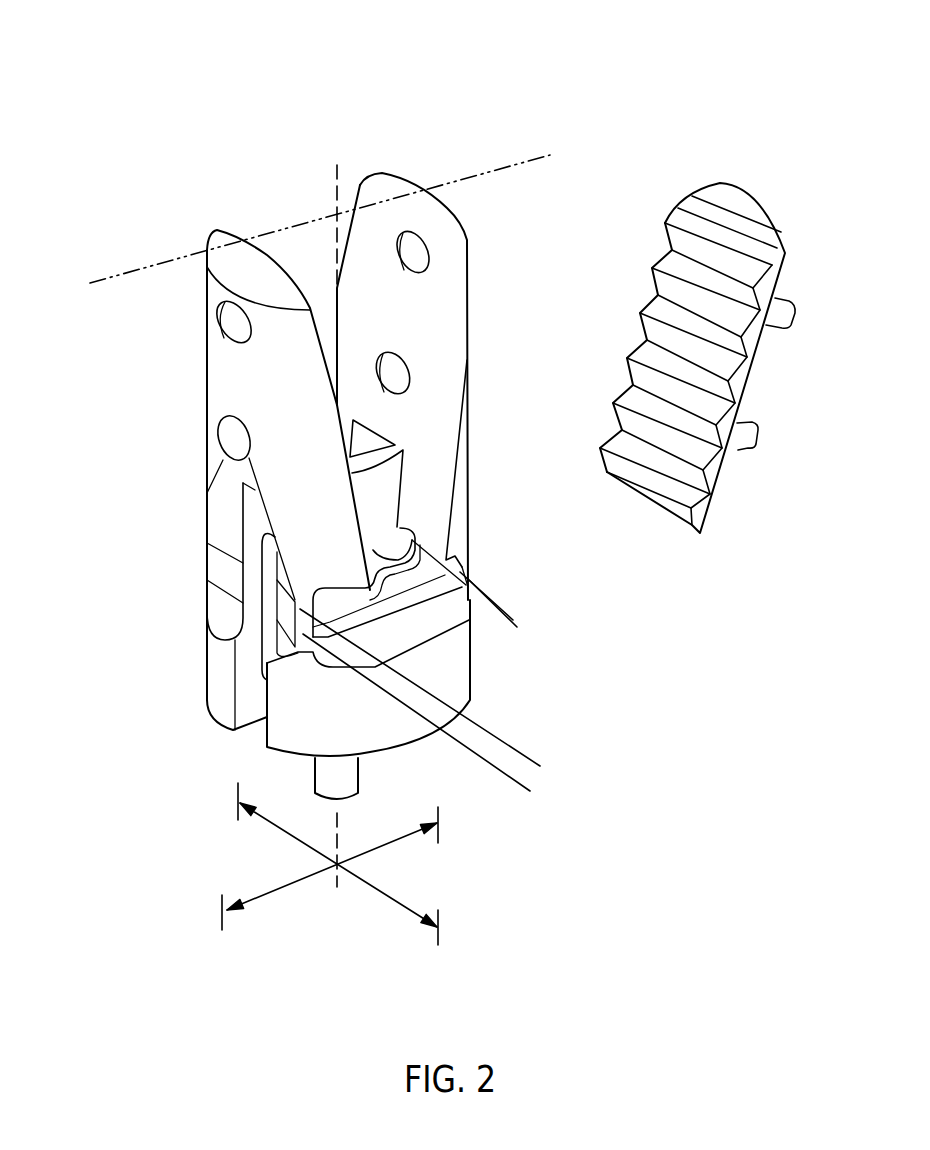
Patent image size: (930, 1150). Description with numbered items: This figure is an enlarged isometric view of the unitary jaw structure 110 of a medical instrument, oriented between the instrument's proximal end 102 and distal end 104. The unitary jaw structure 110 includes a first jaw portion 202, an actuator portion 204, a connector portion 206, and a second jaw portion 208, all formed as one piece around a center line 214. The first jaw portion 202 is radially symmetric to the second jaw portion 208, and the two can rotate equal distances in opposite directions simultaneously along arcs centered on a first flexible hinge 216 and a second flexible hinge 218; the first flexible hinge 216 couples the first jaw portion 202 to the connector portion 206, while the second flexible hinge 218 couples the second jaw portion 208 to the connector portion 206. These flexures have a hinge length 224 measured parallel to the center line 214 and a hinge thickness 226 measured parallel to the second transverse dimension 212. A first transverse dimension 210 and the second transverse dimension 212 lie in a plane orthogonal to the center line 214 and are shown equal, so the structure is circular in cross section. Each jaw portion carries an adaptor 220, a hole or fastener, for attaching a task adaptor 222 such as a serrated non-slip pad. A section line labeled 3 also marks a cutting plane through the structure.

The proximal end 102 is at (338, 960).
The distal end 104 is at (337, 102).
The unitary jaw structure 110 is at (252, 67).
The first jaw portion 202 is at (199, 235).
The actuator portion 204 is at (337, 778).
The connector portion 206 is at (473, 620).
The second jaw portion 208 is at (461, 386).
The first transverse dimension 210 is at (402, 893).
The second transverse dimension 212 is at (272, 887).
The center line 214 is at (335, 200).
The first flexible hinge 216 is at (188, 552).
The second flexible hinge 218 is at (492, 577).
The adaptor 220 is at (488, 241).
The task adaptor 222 is at (713, 183).
The hinge length 224 is at (510, 746).
The hinge thickness 226 is at (457, 622).
The section line 3- 3 is at (90, 283).